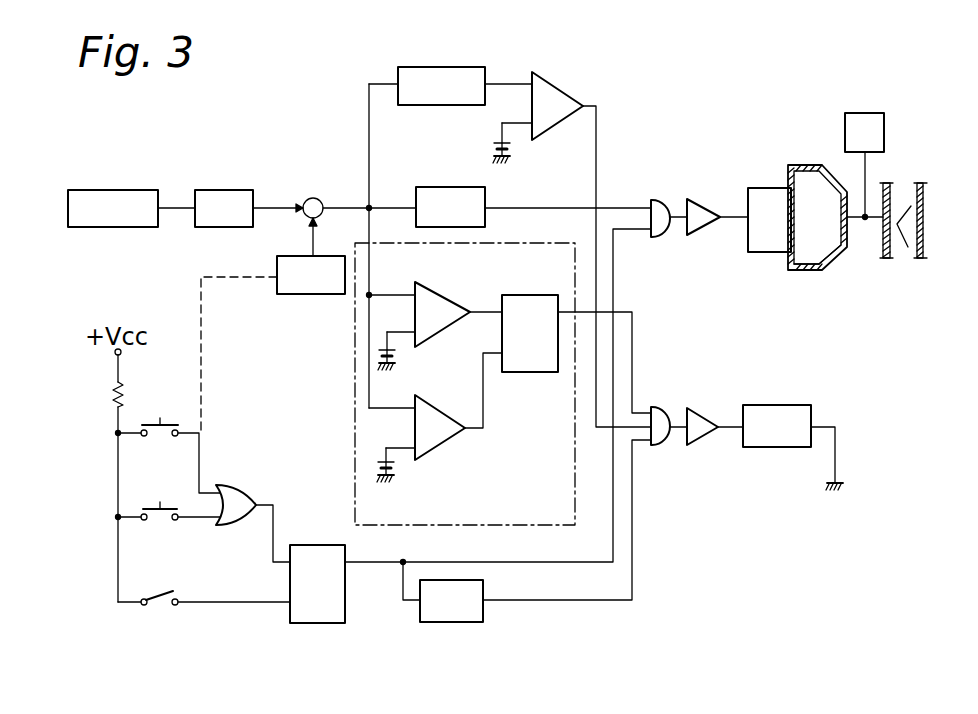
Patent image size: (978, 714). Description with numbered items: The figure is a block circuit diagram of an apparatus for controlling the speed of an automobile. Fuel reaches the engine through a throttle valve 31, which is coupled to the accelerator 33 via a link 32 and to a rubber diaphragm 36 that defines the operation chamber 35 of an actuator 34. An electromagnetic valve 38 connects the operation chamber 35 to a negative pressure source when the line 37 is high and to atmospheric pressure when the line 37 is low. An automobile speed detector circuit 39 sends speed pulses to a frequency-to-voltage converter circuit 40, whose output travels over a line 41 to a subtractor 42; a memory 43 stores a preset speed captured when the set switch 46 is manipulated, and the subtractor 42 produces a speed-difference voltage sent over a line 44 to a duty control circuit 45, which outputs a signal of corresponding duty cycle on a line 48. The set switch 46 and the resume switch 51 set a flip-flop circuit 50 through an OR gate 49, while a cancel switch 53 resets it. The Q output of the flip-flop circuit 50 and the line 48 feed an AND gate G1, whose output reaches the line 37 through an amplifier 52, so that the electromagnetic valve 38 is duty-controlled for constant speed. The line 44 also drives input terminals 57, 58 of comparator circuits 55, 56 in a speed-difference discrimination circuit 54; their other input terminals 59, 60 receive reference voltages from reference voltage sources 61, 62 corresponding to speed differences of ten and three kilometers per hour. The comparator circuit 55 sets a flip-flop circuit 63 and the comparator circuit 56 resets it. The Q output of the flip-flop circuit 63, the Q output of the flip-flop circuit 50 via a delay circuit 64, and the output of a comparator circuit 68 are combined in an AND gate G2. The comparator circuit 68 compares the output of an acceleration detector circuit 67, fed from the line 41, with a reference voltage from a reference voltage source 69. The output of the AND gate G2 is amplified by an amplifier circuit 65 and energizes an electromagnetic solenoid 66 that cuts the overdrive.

The throttle valve 31 is at (923, 236).
The link 32 is at (868, 222).
The accelerator 33 is at (884, 128).
The actuator 34 is at (805, 163).
The operation chamber 35 is at (808, 265).
The diaphragm 36 is at (835, 258).
The line 37 is at (735, 214).
The electromagnetic valve 38 is at (755, 236).
The automobile speed detector circuit 39 is at (125, 190).
The frequency-to-voltage converter circuit 40 is at (218, 190).
The line 41 is at (267, 207).
The subtractor 42 is at (310, 196).
The memory 43 is at (291, 296).
The line 44 is at (346, 205).
The duty control circuit 45 is at (432, 187).
The set switch 46 is at (171, 422).
The line 48 is at (548, 206).
The OR gate 49 is at (232, 491).
The flip-flop circuit 50 is at (313, 624).
The resume switch 51 is at (170, 509).
The amplifier 52 is at (701, 198).
The cancel switch 53 is at (168, 597).
The speed-difference discrimination circuit 54 is at (575, 500).
The comparator circuit 55 is at (446, 302).
The comparator circuit 56 is at (440, 440).
The input terminal 57 is at (393, 295).
The input terminal 58 is at (369, 415).
The input terminal 59 is at (380, 340).
The input terminal 60 is at (386, 458).
The reference voltage source 61 is at (398, 358).
The reference voltage source 62 is at (398, 478).
The flip-flop circuit 63 is at (530, 299).
The delay circuit 64 is at (451, 622).
The amplifier circuit 65 is at (700, 415).
The electromagnetic solenoid 66 is at (778, 405).
The acceleration detector circuit 67 is at (445, 67).
The comparator circuit 68 is at (557, 93).
The reference voltage source 69 is at (493, 145).
The AND gate G1 is at (658, 198).
The AND gate G2 is at (660, 407).